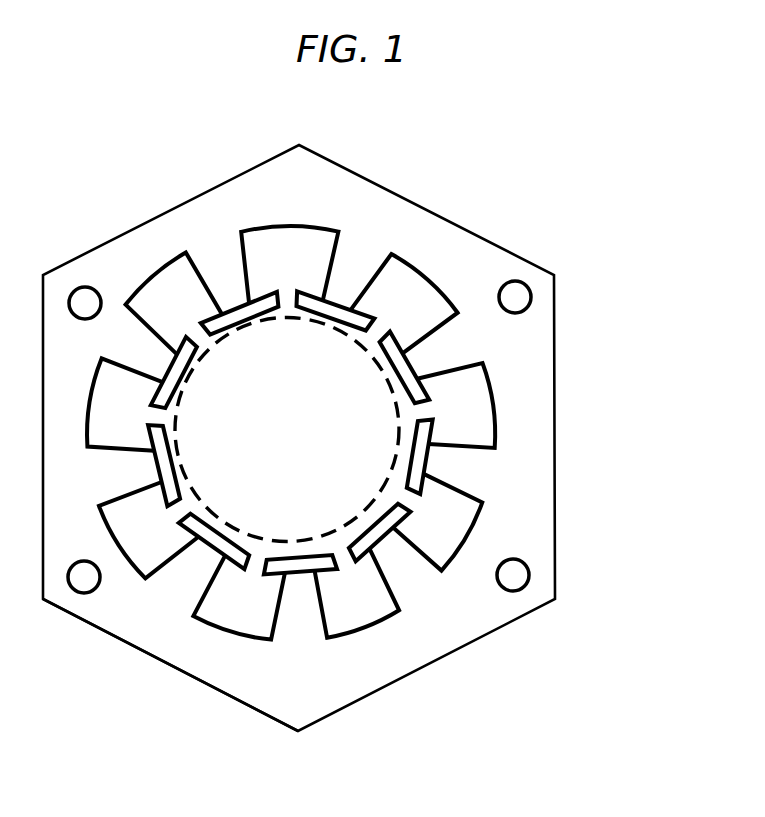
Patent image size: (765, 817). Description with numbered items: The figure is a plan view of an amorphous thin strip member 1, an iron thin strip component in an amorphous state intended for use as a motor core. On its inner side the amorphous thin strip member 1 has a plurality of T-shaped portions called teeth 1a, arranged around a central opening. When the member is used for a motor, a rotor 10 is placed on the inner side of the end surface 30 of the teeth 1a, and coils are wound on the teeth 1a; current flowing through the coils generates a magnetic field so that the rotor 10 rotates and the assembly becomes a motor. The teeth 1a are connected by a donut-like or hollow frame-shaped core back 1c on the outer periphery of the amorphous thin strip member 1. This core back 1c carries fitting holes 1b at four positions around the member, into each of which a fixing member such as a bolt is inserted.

The amorphous thin strip member 1 is at (526, 459).
The teeth 1a is at (358, 270).
The fitting holes 1b is at (513, 577).
The core back 1c is at (170, 648).
The rotor 10 is at (383, 366).
The end surface 30 is at (407, 377).